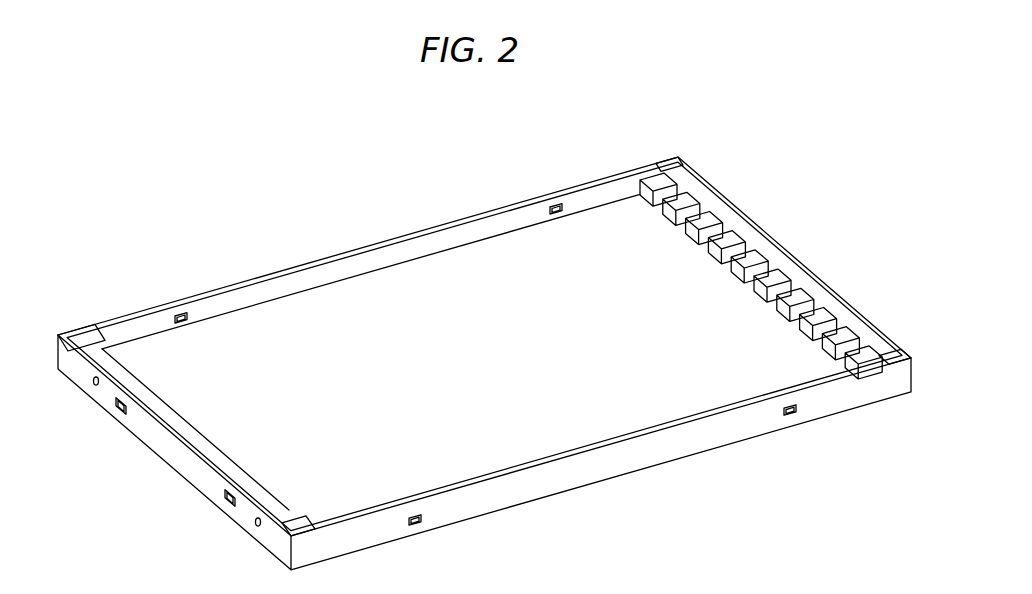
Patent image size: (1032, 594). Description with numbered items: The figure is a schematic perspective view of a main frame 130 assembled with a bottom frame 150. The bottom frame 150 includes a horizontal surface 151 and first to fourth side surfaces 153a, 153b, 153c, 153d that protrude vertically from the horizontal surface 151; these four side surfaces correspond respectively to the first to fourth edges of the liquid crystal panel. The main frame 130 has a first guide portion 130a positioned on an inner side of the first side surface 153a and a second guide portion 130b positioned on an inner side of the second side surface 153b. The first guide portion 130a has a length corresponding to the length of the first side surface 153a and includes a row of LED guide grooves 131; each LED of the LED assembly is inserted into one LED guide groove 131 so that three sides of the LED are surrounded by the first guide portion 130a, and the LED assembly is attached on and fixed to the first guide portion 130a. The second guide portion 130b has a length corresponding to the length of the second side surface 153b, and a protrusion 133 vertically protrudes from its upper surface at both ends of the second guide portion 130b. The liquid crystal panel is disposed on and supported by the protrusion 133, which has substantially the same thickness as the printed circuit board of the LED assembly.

The main frame 130 is at (388, 116).
The first guide portion 130a is at (657, 160).
The second guide portion 130b is at (103, 353).
The LED guide groove 131 is at (730, 245).
The protrusion 133 is at (78, 333).
The bottom frame 150 is at (776, 457).
The horizontal surface 151 is at (517, 503).
The first side surface 153a is at (803, 258).
The second side surface 153b is at (178, 452).
The third side surface 153c is at (593, 467).
The fourth side surface 153d is at (255, 297).